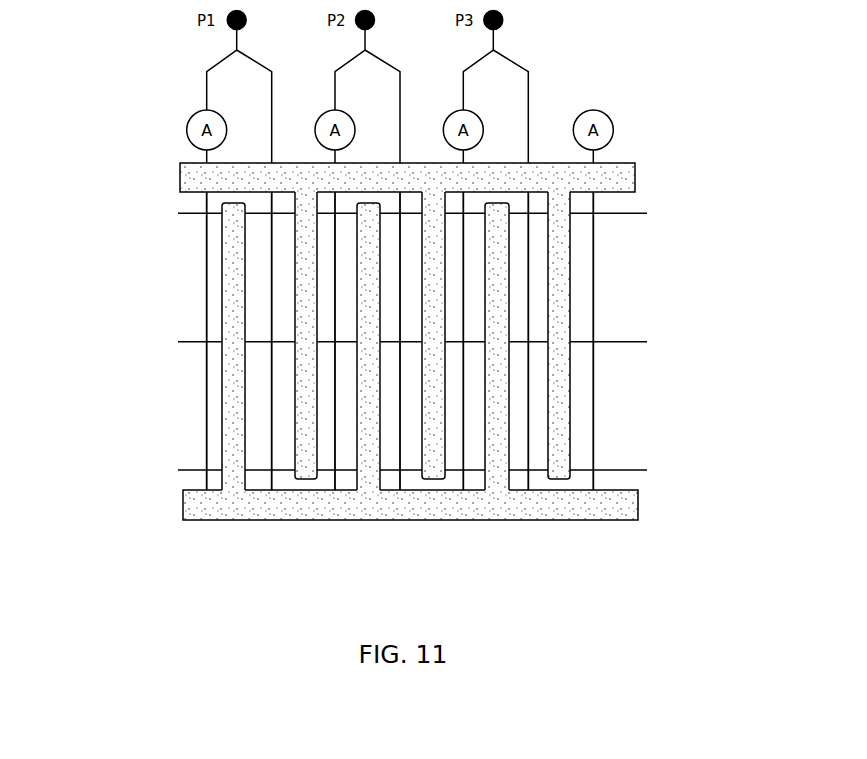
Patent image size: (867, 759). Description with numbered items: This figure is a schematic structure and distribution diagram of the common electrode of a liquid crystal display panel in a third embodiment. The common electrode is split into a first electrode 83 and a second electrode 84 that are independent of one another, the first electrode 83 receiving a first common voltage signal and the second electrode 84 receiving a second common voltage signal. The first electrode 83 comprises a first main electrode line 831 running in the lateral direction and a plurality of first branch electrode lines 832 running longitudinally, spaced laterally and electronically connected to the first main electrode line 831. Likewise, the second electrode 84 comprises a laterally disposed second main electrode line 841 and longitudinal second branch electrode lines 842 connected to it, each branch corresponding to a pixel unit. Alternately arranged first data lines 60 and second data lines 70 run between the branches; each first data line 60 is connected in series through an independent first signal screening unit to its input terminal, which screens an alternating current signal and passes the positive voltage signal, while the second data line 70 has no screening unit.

The first data line 60 is at (206, 242).
The second data line 70 is at (270, 392).
The first electrode 83 is at (399, 405).
The first main electrode line 831 is at (197, 502).
The first branch electrode line 832 is at (235, 284).
The second electrode 84 is at (396, 299).
The second main electrode line 841 is at (182, 183).
The second branch electrode line 842 is at (558, 293).